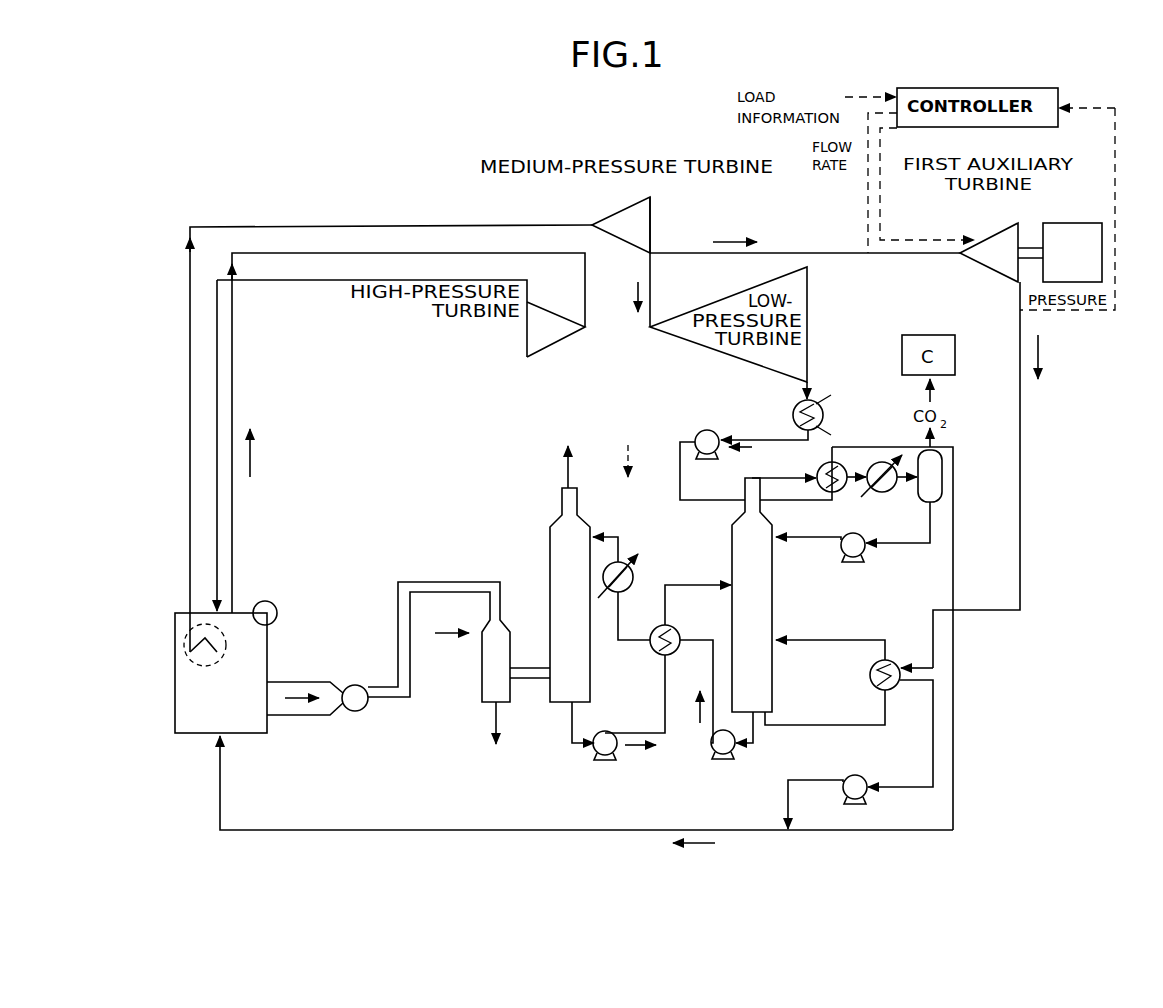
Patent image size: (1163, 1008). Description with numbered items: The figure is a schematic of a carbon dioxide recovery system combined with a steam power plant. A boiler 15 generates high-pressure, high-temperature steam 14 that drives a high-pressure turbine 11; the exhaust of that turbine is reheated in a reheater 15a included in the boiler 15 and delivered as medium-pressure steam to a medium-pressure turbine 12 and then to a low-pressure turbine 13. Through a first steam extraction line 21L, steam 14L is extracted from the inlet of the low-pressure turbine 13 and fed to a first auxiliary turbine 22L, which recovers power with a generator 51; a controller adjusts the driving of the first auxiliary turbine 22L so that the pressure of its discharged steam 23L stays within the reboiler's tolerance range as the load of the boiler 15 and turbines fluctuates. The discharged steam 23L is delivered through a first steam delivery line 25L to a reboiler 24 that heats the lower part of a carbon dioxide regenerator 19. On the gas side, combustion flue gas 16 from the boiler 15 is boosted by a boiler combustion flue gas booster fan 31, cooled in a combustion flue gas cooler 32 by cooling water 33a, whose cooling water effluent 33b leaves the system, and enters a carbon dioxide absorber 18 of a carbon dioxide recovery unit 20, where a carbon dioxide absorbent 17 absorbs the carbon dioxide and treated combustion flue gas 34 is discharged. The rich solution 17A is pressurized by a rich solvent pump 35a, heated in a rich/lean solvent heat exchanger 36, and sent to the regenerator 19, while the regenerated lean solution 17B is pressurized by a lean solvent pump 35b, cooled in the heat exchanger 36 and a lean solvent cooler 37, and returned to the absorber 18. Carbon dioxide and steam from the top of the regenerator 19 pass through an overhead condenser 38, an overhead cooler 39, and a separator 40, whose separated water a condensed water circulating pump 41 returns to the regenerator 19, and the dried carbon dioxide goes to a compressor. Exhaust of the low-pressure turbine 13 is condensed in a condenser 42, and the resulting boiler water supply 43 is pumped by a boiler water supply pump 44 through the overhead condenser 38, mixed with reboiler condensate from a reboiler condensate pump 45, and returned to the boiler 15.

The high-pressure turbine 11 is at (527, 330).
The medium-pressure turbine 12 is at (625, 210).
The low-pressure turbine 13 is at (808, 325).
The steam 14 is at (253, 455).
The extracted steam 14L is at (724, 242).
The boiler 15 is at (269, 642).
The reheater 15a is at (184, 649).
The combustion flue gas 16 is at (298, 720).
The carbon dioxide absorbent 17 is at (713, 794).
The rich solution 17A is at (642, 755).
The lean solution 17B is at (698, 725).
The carbon dioxide absorber 18 is at (548, 546).
The carbon dioxide regenerator 19 is at (731, 556).
The carbon dioxide recovery unit 20 is at (626, 448).
The first steam extraction line 21L is at (822, 252).
The first auxiliary turbine 22L is at (990, 236).
The discharged steam 23L is at (1040, 362).
The reboiler 24 is at (892, 658).
The first steam delivery line 25L is at (1022, 445).
The boiler combustion flue gas booster fan 31 is at (356, 712).
The combustion flue gas cooler 32 is at (481, 688).
The cooling water 33a is at (450, 640).
The cooling water effluent 33b is at (490, 720).
The combustion flue gas from which CO2 is reduced 34 is at (564, 463).
The rich solvent pump 35a is at (610, 731).
The lean solvent pump 35b is at (728, 755).
The rich/lean solvent heat exchanger 36 is at (674, 630).
The lean solvent cooler 37 is at (630, 584).
The overhead condenser 38 is at (840, 463).
The overhead cooler 39 is at (881, 494).
The separator 40 is at (943, 470).
The condensed water circulating pump 41 is at (840, 548).
The condenser 42 is at (793, 410).
The boiler water supply 43 is at (752, 448).
The boiler water supply pump 44 is at (704, 430).
The reboiler condensate pump 45 is at (846, 792).
The generator 51 is at (1072, 223).